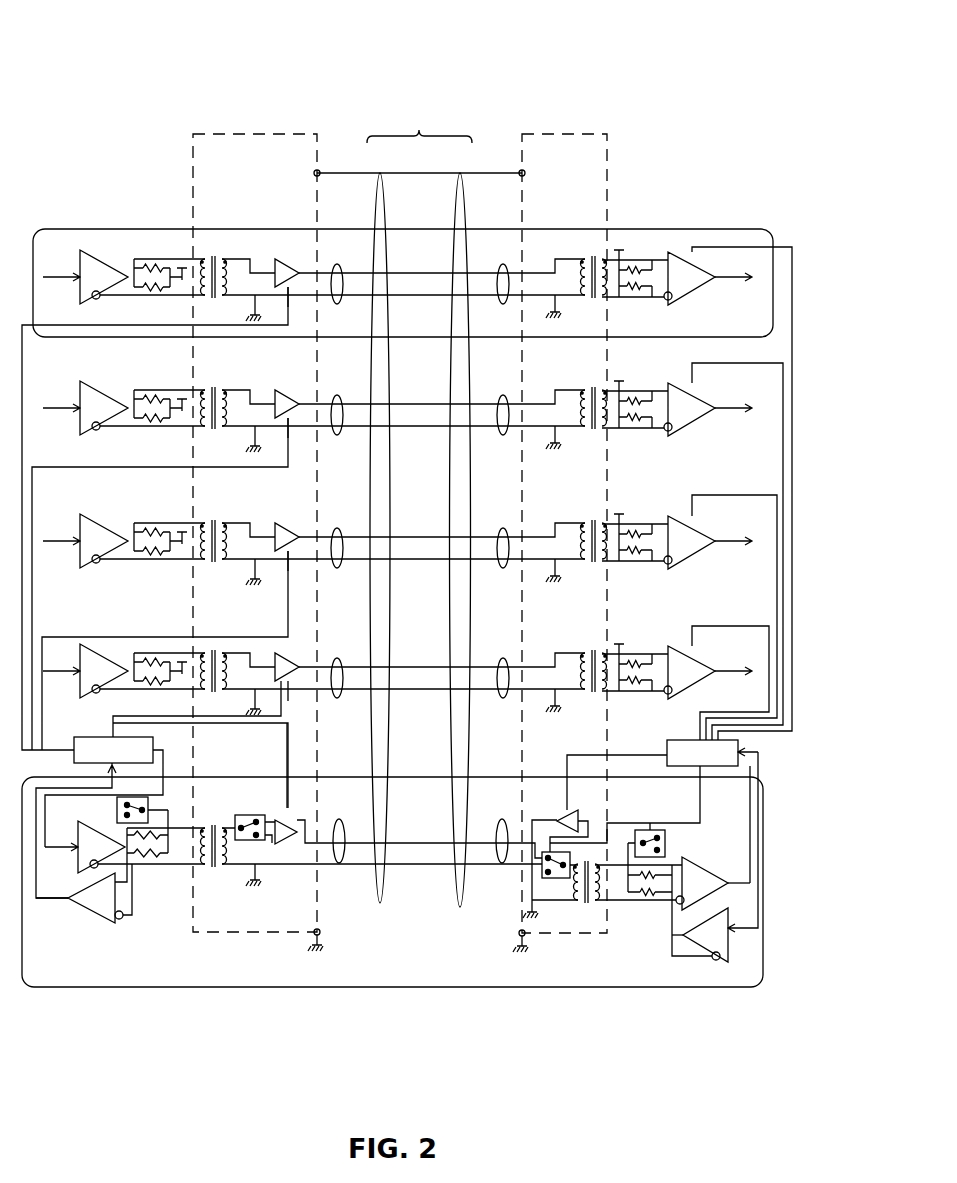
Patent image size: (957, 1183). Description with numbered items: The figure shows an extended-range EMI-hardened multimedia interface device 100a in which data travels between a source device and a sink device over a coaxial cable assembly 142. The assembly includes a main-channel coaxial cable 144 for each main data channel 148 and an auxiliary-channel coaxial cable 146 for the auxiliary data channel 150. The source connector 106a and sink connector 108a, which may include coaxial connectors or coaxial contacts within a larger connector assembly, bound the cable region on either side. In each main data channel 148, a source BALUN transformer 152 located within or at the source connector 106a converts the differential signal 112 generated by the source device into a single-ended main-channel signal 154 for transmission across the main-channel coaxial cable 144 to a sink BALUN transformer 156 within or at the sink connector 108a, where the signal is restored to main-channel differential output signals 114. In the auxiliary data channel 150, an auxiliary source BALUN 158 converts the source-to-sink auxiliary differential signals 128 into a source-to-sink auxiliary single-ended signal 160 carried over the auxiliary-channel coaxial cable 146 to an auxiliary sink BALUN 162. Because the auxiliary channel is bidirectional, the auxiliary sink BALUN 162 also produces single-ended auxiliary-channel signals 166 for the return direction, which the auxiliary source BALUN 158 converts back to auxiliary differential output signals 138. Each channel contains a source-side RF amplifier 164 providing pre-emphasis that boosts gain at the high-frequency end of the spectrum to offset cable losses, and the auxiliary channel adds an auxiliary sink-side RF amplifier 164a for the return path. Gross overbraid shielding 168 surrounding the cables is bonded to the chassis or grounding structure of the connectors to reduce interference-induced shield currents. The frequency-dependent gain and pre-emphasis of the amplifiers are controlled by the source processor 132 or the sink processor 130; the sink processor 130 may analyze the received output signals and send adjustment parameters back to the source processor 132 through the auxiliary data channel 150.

The extended-range EMI-hardened multimedia interface device 100a is at (69, 44).
The source connector 106a is at (275, 180).
The sink connector 108a is at (592, 183).
The differential signal 112 is at (85, 288).
The main-channel differential output signals 114 is at (686, 267).
The auxiliary source-to-sink differential signals 128 is at (115, 830).
The sink processor 130 is at (718, 765).
The source processor 132 is at (128, 762).
The auxiliary differential output signals 138 is at (124, 920).
The coaxial cable assembly 142 is at (419, 123).
The main-channel coaxial cable 144 is at (349, 297).
The auxiliary-channel coaxial cable 146 is at (340, 819).
The main data channel 148 is at (55, 229).
The auxiliary data channel 150 is at (393, 988).
The source BALUN transformer 152 is at (231, 266).
The single-ended main-channel signal 154 is at (443, 264).
The sink BALUN transformer 156 is at (579, 266).
The auxiliary source BALUN 158 is at (214, 870).
The source-to-sink auxiliary single-ended signal 160 is at (446, 814).
The auxiliary sink BALUN 162 is at (588, 903).
The source-side RF amplifier 164 is at (283, 539).
The auxiliary sink-side RF amplifier 164a is at (578, 812).
The single-ended auxiliary-channel signals 166 is at (396, 833).
The gross overbraid shielding 168 is at (372, 200).